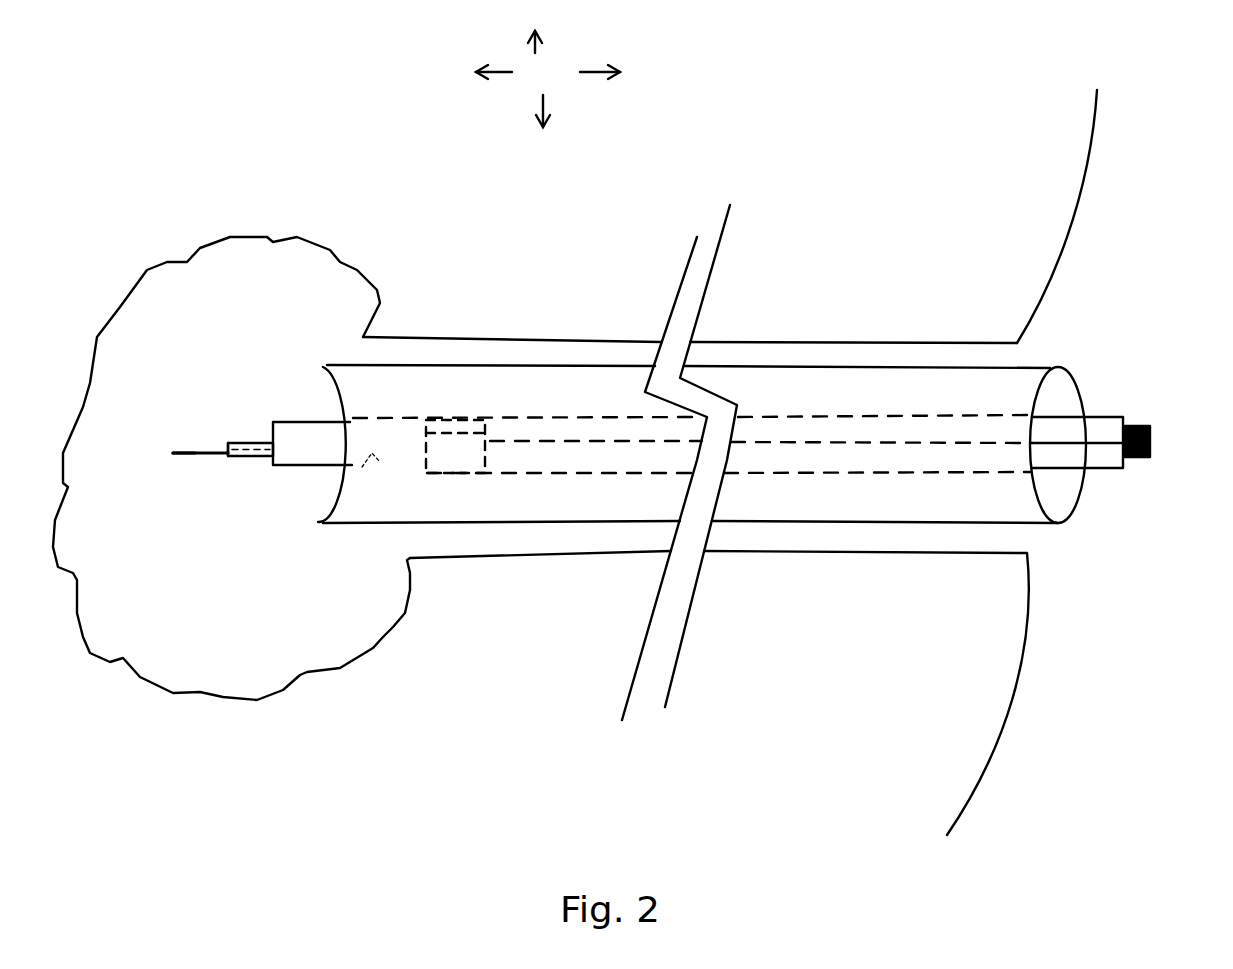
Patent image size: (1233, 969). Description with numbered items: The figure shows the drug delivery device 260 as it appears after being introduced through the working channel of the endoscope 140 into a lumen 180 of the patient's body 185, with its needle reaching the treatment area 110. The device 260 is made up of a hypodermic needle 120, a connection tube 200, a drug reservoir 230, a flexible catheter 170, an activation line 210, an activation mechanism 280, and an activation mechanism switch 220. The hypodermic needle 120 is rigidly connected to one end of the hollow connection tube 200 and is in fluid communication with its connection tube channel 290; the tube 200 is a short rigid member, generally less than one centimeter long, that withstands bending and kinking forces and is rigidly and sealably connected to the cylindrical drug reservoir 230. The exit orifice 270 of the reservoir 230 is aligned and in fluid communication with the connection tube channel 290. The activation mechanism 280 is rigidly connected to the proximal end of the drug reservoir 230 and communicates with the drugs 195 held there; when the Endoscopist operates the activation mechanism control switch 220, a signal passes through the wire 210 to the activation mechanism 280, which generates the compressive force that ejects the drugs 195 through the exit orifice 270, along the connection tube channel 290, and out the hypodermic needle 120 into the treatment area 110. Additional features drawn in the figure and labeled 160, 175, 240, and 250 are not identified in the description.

The treatment area 110 is at (150, 456).
The hypodermic needle 120 is at (201, 456).
The endoscope 140 is at (805, 524).
The vessel wall 160 is at (1103, 153).
The flexible catheter 170 is at (740, 477).
The directions of movement 175 is at (548, 79).
The lumen 180 is at (162, 266).
The patient's body 185 is at (1030, 540).
The drugs 195 is at (400, 442).
The connection tube 200 is at (251, 442).
The activation line 210 is at (592, 440).
The activation mechanism switch 220 is at (1147, 462).
The drug reservoir 230 is at (383, 473).
The vessel lumen 240 is at (967, 298).
The outer sheath 250 is at (405, 327).
The drug delivery device 260 is at (747, 397).
The exit orifice 270 is at (286, 438).
The activation mechanism 280 is at (477, 465).
The connection tube channel 290 is at (238, 457).